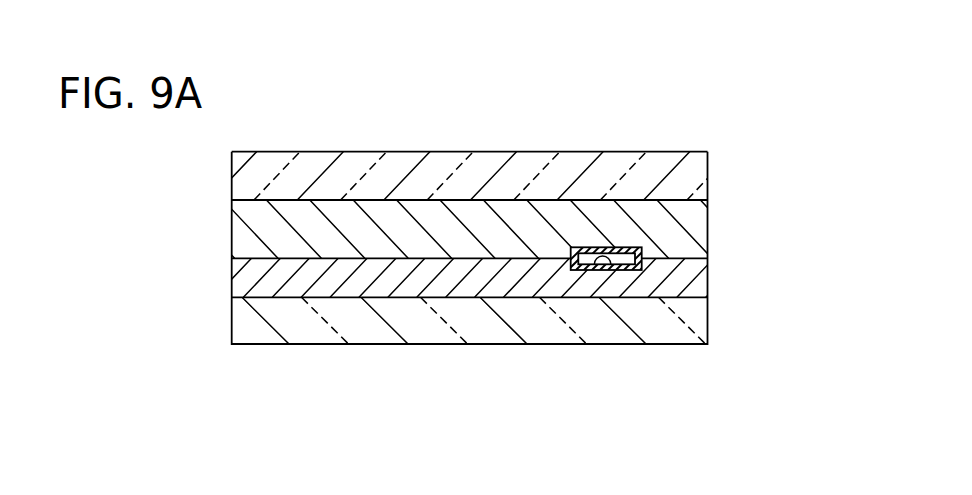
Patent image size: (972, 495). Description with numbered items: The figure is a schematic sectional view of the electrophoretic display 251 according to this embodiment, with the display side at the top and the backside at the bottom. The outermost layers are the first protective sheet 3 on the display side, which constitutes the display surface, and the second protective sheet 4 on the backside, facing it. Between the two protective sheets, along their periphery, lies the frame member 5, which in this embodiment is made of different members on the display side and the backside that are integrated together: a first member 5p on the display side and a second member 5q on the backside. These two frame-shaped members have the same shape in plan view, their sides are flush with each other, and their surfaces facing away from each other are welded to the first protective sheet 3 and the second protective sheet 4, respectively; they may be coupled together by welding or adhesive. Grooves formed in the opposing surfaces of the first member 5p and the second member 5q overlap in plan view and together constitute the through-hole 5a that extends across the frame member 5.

The electrophoretic display 251 is at (609, 104).
The first protective sheet 3 is at (405, 161).
The second protective sheet 4 is at (419, 341).
The frame member 5 is at (798, 203).
The first member 5p is at (697, 220).
The second member 5q is at (693, 283).
The through-hole 5a is at (613, 270).